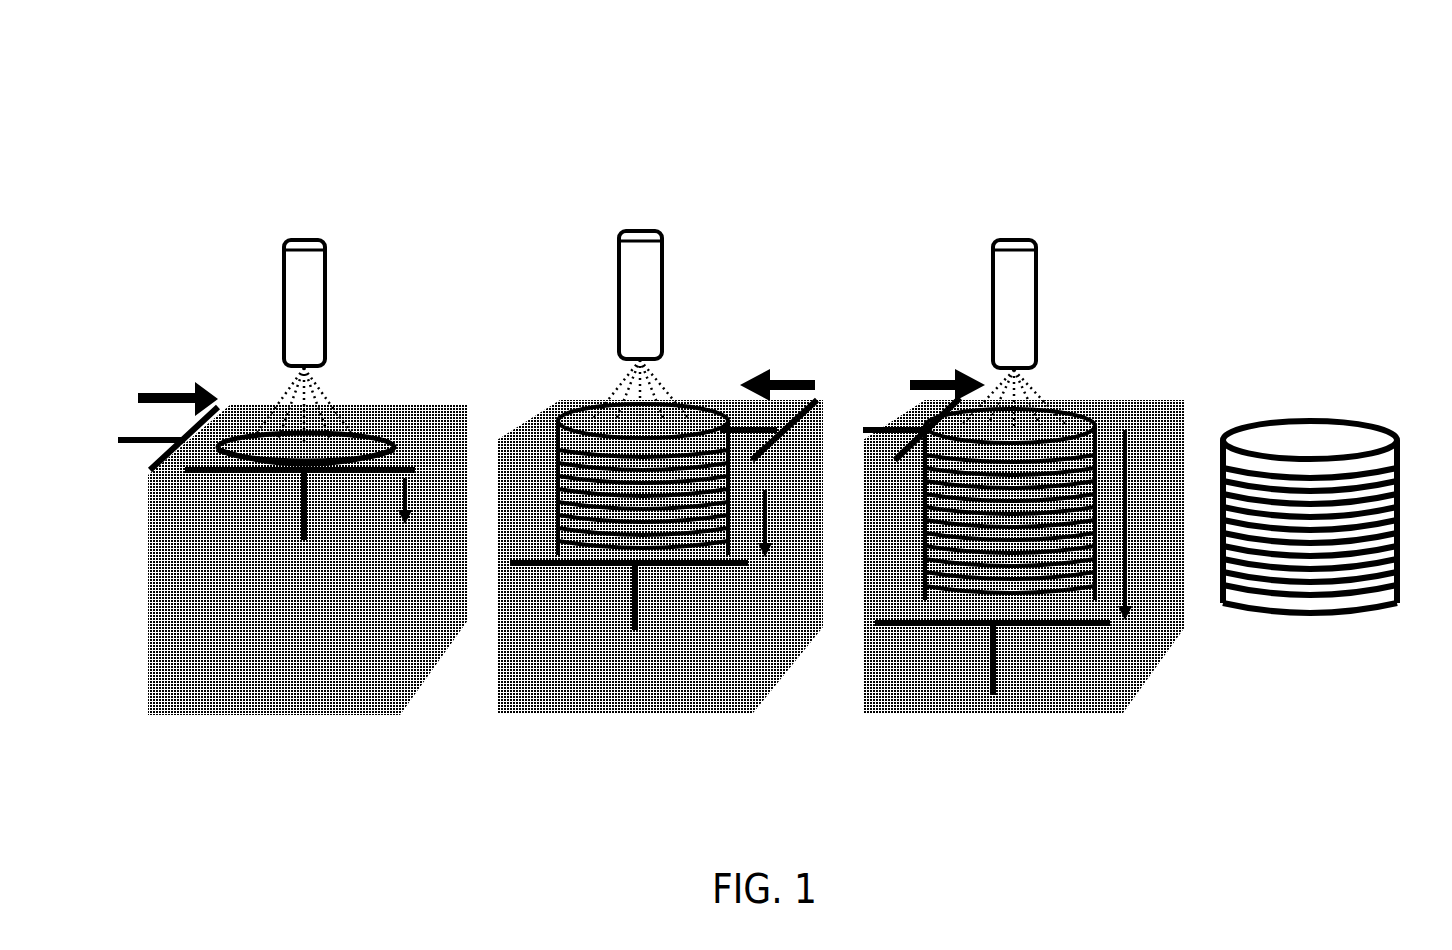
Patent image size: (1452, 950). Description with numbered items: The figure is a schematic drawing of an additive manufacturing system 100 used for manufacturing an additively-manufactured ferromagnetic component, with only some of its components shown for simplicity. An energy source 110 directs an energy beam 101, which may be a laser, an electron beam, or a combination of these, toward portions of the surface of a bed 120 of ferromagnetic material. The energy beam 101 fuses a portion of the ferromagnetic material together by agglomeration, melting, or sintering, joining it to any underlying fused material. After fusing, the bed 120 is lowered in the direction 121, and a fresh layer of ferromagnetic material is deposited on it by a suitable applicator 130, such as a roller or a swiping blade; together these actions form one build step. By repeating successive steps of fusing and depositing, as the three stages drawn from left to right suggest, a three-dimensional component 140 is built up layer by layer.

The additive manufacturing system 100 is at (1315, 62).
The energy beam 101 is at (350, 400).
The energy source 110 is at (305, 222).
The bed 120 is at (440, 410).
The direction 121 is at (440, 483).
The applicator 130 is at (123, 425).
The three-dimensional component 140 is at (1302, 406).